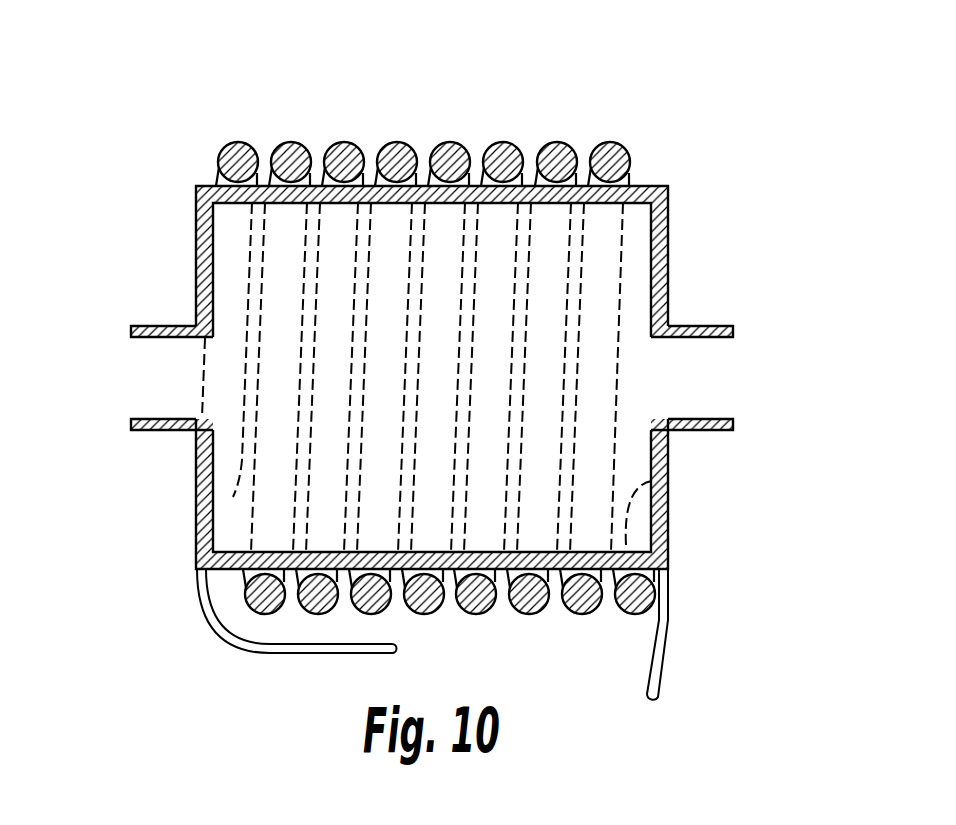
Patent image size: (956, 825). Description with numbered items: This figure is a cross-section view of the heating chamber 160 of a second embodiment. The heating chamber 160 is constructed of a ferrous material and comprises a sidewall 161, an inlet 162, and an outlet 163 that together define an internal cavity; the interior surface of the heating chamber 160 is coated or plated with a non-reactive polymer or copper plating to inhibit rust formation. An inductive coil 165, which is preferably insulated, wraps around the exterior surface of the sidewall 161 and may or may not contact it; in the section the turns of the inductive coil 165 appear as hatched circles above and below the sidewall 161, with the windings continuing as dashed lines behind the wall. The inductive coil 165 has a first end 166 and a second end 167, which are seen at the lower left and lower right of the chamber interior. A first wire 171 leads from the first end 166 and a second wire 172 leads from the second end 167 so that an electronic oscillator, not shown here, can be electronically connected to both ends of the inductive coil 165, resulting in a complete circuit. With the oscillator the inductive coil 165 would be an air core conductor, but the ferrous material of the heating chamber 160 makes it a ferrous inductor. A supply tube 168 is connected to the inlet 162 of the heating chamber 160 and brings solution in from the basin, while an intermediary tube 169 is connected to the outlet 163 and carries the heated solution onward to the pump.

The heating chamber 160 is at (435, 373).
The sidewall 161 is at (669, 229).
The inlet 162 is at (198, 331).
The outlet 163 is at (680, 330).
The inductive coil 165 is at (237, 142).
The first end 166 is at (233, 500).
The second end 167 is at (651, 482).
The supply tube 168 is at (132, 430).
The intermediary tube 169 is at (731, 428).
The first wire 171 is at (242, 650).
The second wire 172 is at (656, 695).